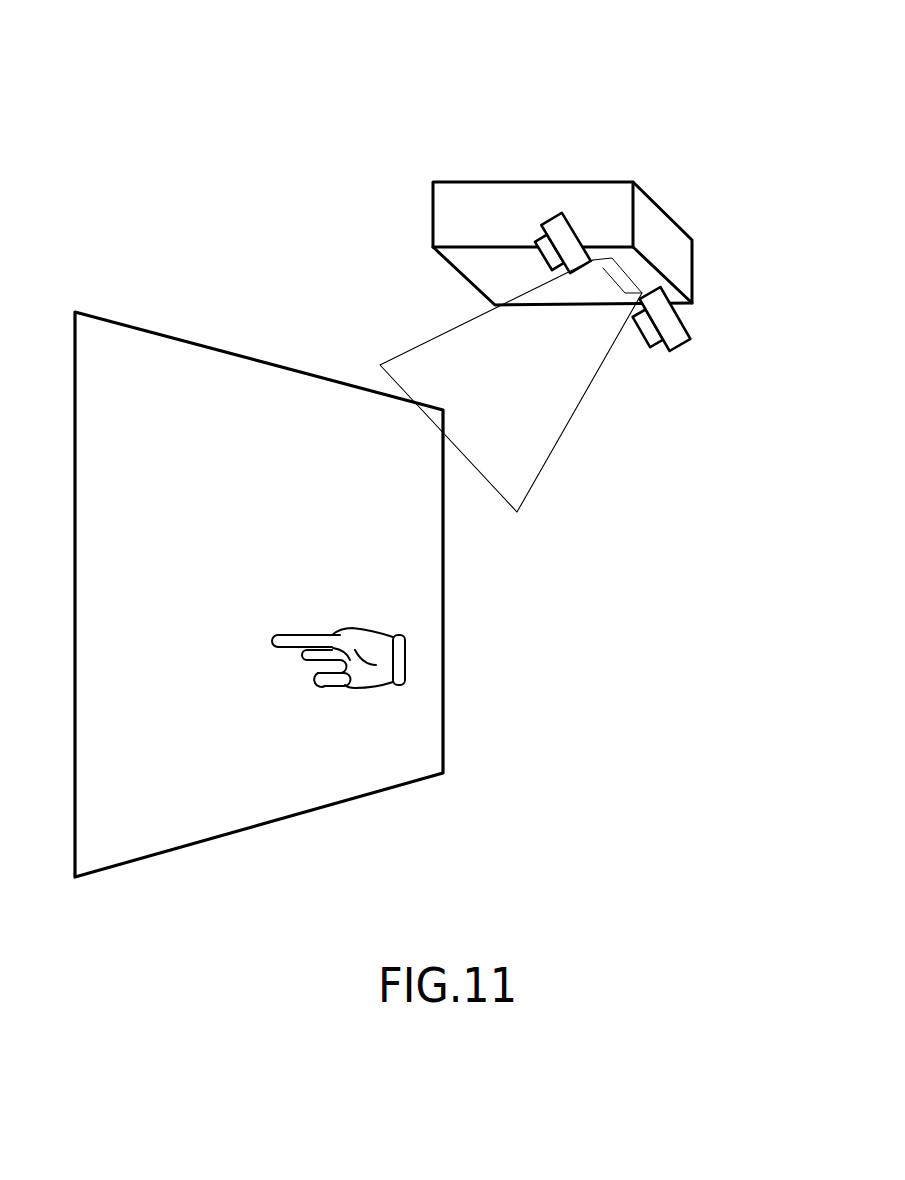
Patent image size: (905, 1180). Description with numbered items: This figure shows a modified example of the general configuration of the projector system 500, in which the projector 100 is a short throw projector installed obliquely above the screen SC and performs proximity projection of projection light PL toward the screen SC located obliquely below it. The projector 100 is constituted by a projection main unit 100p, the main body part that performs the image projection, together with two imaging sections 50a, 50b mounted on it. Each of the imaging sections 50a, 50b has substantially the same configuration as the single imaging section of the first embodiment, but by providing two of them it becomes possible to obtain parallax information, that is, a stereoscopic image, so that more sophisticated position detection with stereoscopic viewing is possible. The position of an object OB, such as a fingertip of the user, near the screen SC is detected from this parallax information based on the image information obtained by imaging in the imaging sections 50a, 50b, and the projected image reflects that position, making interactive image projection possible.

The projector system 500 is at (442, 104).
The projector 100 is at (537, 171).
The projection main unit 100p is at (602, 197).
The imaging section 50b is at (565, 237).
The imaging section 50a is at (677, 322).
The projection light PL is at (560, 420).
The screen SC is at (178, 357).
The object OB is at (357, 677).